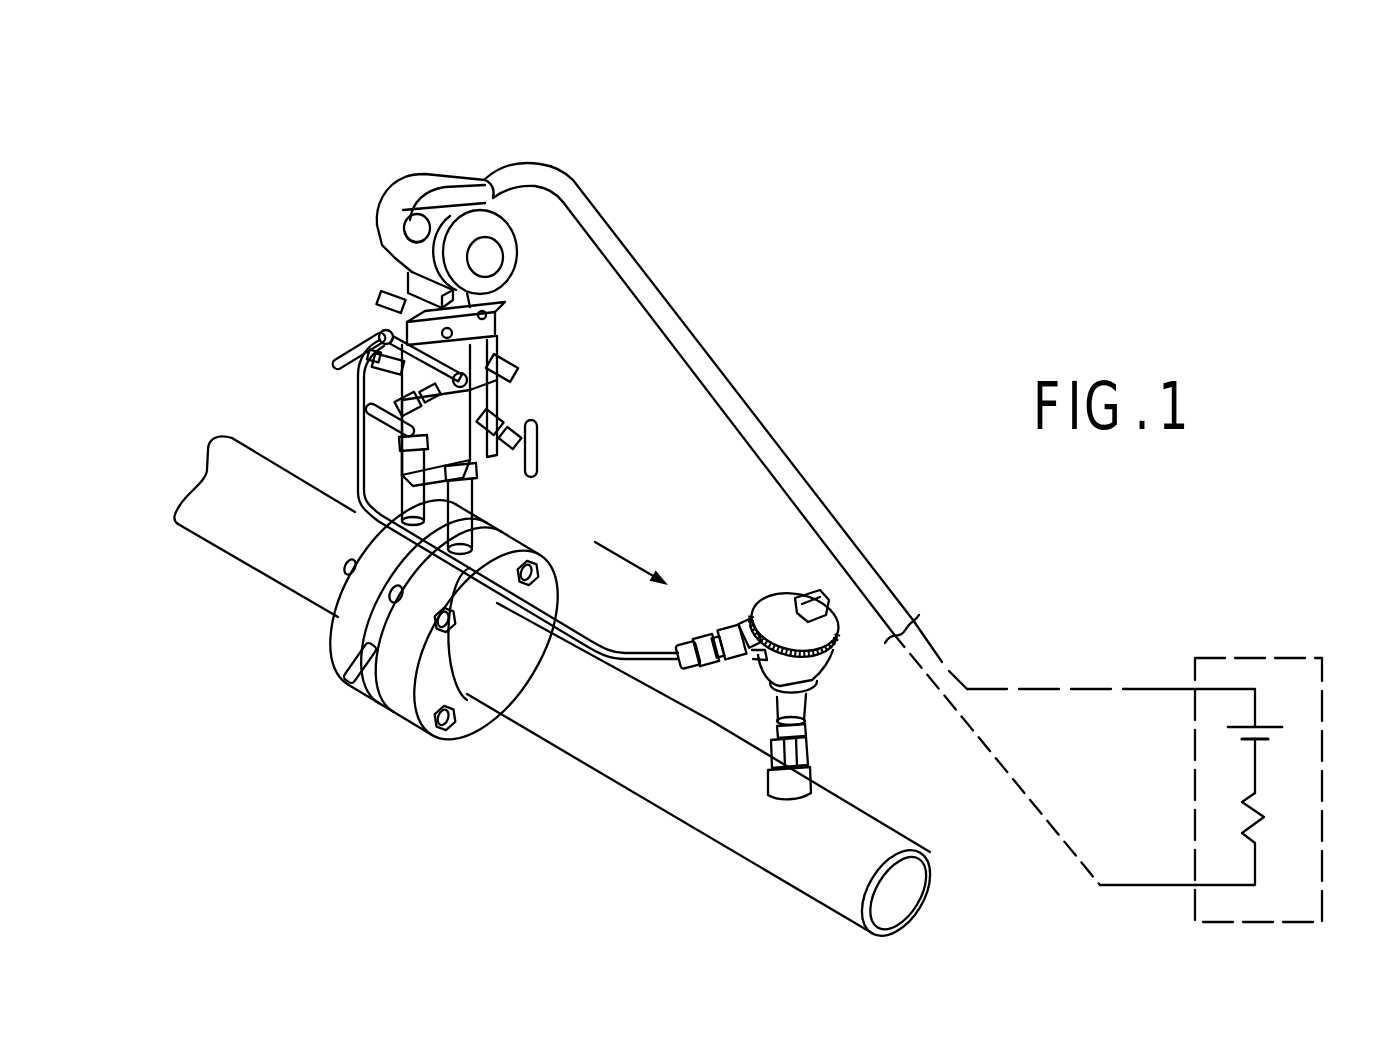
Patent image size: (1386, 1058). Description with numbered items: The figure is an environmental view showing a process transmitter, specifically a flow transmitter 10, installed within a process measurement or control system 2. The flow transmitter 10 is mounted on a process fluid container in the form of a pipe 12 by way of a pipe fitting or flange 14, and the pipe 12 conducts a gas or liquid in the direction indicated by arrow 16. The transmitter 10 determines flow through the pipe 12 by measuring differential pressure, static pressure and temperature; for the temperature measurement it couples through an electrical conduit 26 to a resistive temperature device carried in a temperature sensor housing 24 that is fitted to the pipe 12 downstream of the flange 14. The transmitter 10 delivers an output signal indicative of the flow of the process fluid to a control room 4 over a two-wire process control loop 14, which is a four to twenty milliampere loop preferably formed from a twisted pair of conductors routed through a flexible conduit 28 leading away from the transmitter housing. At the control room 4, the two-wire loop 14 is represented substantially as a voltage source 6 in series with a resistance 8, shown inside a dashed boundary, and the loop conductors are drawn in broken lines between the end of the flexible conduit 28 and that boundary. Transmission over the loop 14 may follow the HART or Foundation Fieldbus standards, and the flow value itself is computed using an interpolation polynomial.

The process measurement or control system 2 is at (815, 250).
The control room 4 is at (1203, 658).
The voltage source 6 is at (1268, 727).
The resistance 8 is at (1260, 822).
The flow transmitter 10 is at (445, 175).
The pipe 12 is at (233, 542).
The two-wire process control loop 14 is at (372, 698).
The arrow 16 is at (616, 548).
The temperature sensor housing 24 is at (779, 598).
The electrical conduit 26 is at (611, 649).
The flexible conduit 28 is at (706, 352).